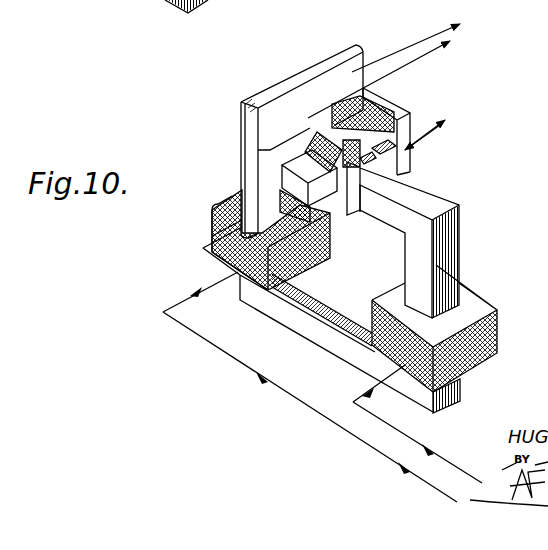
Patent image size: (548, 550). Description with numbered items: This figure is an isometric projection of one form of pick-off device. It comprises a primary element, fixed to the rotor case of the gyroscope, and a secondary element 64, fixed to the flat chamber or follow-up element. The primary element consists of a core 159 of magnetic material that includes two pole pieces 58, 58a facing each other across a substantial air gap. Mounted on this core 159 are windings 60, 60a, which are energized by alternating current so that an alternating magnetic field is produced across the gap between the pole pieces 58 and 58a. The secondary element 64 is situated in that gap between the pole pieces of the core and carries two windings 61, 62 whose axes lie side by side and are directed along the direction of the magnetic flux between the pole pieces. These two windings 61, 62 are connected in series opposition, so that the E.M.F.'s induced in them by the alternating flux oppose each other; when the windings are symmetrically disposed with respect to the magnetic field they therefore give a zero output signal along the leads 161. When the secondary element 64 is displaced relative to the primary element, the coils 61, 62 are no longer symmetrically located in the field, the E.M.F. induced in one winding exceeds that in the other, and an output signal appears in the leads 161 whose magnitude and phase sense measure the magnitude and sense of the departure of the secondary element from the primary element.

The pole piece 58 is at (368, 56).
The pole piece 58a is at (394, 152).
The winding 60 is at (212, 235).
The winding 60a is at (470, 304).
The winding 61 is at (318, 133).
The winding 62 is at (386, 105).
The secondary element 64 is at (416, 130).
The core 159 is at (437, 203).
The leads 161 is at (432, 50).